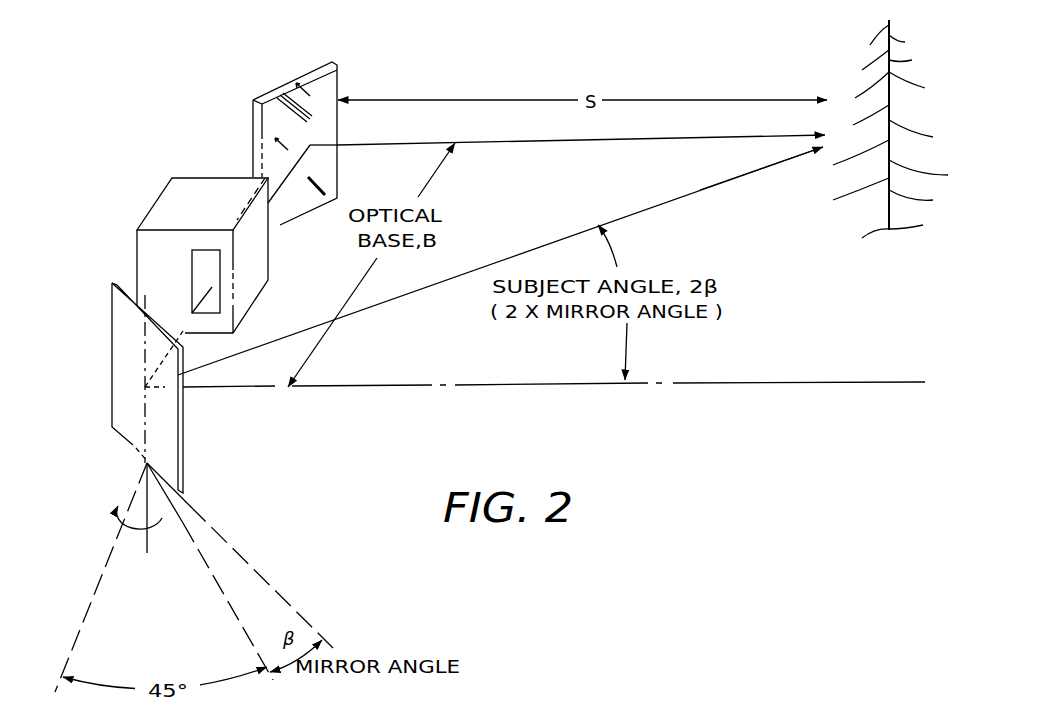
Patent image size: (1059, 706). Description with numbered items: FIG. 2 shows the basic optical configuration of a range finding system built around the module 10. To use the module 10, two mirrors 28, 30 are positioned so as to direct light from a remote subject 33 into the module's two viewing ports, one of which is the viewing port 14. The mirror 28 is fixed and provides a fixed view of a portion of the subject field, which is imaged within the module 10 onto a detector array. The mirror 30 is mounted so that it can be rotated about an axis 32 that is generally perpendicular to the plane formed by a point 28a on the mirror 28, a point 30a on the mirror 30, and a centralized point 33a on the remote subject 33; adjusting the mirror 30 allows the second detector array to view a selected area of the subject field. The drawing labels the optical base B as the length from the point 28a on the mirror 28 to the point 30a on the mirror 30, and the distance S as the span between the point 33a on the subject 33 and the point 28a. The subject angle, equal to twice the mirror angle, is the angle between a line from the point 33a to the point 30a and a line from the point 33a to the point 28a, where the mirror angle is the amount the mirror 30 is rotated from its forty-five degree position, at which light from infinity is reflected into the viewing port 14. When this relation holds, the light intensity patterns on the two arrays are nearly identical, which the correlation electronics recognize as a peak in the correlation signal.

The module 10 is at (193, 177).
The viewing port 14 is at (203, 267).
The mirror 28 is at (313, 71).
The point on mirror 28 28a is at (312, 146).
The mirror 30 is at (112, 344).
The point on mirror 30 30a is at (148, 392).
The axis 32 is at (147, 553).
The remote subject 33 is at (920, 115).
The centralized point on the remote subject 33a is at (837, 140).